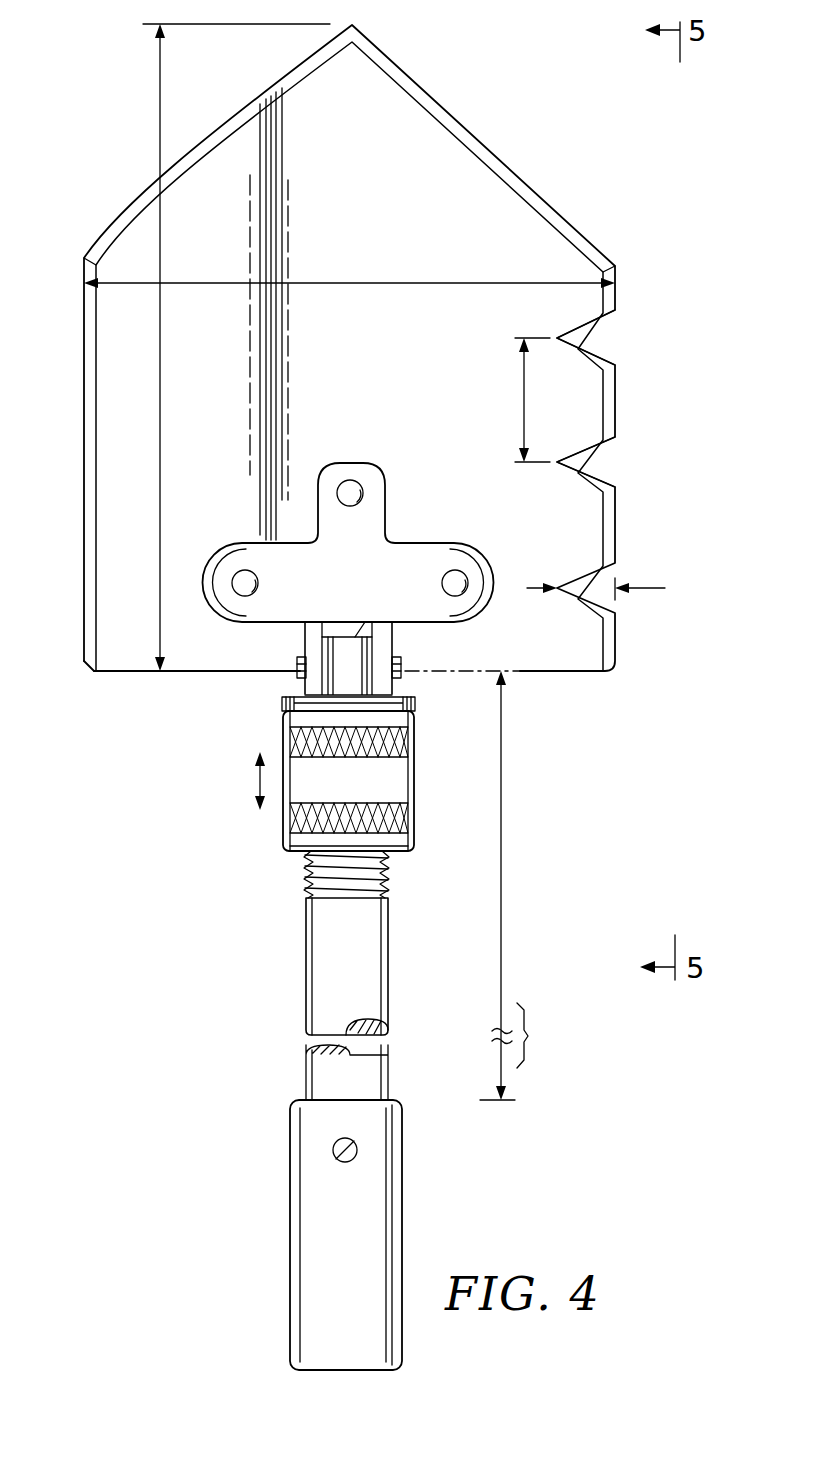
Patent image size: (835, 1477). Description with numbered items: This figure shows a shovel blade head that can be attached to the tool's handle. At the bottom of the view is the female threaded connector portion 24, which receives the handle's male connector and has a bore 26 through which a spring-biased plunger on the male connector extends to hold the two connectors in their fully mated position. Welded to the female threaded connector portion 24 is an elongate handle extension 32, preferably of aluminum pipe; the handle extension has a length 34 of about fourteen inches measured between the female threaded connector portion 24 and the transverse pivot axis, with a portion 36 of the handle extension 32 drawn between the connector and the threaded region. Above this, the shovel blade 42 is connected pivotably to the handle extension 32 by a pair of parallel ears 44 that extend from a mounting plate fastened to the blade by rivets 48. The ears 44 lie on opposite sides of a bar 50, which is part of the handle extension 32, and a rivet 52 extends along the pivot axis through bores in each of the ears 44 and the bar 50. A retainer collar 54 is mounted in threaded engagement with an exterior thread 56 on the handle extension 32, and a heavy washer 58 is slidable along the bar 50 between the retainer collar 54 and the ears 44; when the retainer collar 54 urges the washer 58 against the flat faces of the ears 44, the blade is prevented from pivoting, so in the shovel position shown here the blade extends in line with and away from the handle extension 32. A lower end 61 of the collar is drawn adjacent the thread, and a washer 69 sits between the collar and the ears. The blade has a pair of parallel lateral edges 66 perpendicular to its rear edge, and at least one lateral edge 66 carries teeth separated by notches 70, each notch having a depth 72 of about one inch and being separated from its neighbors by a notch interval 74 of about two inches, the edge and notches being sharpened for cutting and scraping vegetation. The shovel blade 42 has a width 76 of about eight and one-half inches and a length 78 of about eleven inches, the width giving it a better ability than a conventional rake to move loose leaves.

The female threaded connector portion 24 is at (347, 1235).
The bore 26 is at (337, 1160).
The handle extension 32 is at (313, 999).
The length 34 is at (502, 887).
The shaft upper portion 36 is at (305, 958).
The shovel blade 42 is at (600, 447).
The ears 44 is at (315, 632).
The rivets 48 is at (363, 487).
The bar 50 is at (363, 637).
The rivet 52 is at (298, 666).
The retainer collar 54 is at (312, 781).
The exterior thread 56 is at (307, 872).
The heavy washer 58 is at (284, 712).
The lower edge of sleeve 61 is at (290, 850).
The lateral edges 66 is at (84, 280).
The washer 69 is at (318, 686).
The notches 70 is at (598, 350).
The depth 72 is at (556, 583).
The notch interval 74 is at (523, 422).
The width 76 is at (490, 283).
The length 78 is at (158, 157).